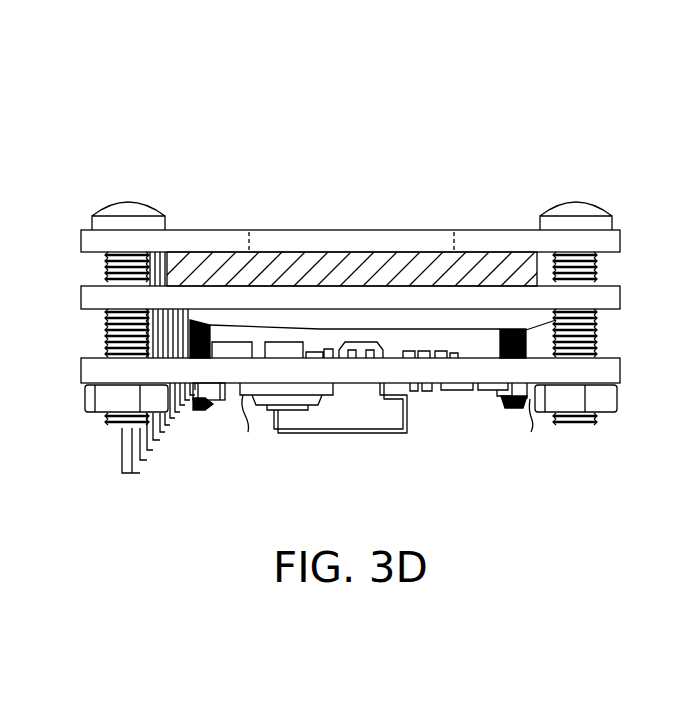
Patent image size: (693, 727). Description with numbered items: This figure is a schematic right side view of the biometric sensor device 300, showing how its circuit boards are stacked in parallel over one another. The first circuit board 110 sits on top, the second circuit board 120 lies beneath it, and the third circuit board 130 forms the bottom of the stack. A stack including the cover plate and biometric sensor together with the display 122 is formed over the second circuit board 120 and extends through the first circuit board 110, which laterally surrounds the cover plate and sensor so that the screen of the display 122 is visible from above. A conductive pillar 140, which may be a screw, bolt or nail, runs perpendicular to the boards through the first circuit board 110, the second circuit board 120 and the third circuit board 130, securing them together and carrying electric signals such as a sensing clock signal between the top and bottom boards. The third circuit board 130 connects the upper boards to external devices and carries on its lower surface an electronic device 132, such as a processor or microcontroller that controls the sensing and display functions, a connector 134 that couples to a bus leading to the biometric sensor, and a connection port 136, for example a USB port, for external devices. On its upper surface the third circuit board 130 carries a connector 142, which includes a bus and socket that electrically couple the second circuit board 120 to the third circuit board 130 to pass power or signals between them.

The biometric sensor device 300 is at (597, 107).
The first circuit board 110 is at (621, 247).
The second circuit board 120 is at (621, 301).
The third circuit board 130 is at (621, 371).
The display 122 is at (489, 268).
The conductive pillar 140 is at (128, 213).
The electronic device 132 is at (241, 396).
The connector 134 is at (528, 400).
The connection port 136 is at (337, 435).
The connector 142 is at (128, 450).